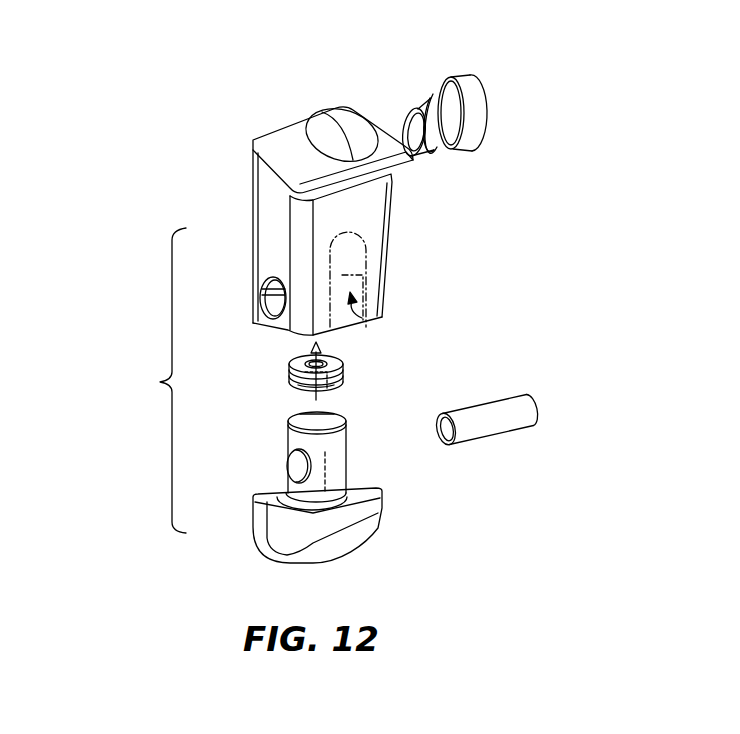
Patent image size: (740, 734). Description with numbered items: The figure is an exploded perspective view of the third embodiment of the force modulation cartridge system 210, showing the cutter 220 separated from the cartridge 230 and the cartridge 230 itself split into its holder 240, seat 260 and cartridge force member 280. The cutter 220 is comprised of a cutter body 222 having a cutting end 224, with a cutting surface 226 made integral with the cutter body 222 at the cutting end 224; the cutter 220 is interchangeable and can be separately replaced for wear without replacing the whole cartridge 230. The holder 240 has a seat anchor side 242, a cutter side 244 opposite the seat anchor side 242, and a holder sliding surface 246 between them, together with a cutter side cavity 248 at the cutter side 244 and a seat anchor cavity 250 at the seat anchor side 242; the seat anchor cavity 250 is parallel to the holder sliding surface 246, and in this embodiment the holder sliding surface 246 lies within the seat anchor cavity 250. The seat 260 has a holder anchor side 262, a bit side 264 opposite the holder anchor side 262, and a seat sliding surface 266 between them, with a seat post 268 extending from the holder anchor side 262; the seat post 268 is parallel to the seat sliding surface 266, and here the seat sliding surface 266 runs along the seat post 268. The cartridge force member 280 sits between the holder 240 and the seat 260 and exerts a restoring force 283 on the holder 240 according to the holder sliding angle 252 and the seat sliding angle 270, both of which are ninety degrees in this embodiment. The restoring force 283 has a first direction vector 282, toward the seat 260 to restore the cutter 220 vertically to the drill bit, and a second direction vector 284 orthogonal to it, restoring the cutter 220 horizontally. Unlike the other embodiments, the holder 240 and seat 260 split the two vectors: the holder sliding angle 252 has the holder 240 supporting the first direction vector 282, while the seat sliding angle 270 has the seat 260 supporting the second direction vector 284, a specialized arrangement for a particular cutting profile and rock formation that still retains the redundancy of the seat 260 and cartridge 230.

The force modulation cartridge system 210 is at (157, 183).
The cutter 220 is at (430, 104).
The cutter body 222 is at (402, 109).
The cutting end 224 is at (448, 86).
The cutting surface 226 is at (470, 90).
The cartridge 230 is at (325, 410).
The holder 240 is at (250, 179).
The seat anchor side 242 is at (273, 328).
The cutter side 244 is at (283, 140).
The holder sliding surface 246 is at (372, 283).
The cutter side cavity 248 is at (344, 127).
The seat anchor cavity 250 is at (368, 317).
The holder sliding angle 252 is at (372, 262).
The seat 260 is at (365, 510).
The holder anchor side 262 is at (273, 560).
The bit side 264 is at (305, 418).
The seat sliding surface 266 is at (332, 462).
The seat post 268 is at (293, 447).
The seat sliding angle 270 is at (347, 470).
The cartridge force member 280 is at (345, 372).
The first direction vector 282 is at (328, 398).
The restoring force 283 is at (340, 352).
The second direction vector 284 is at (343, 389).